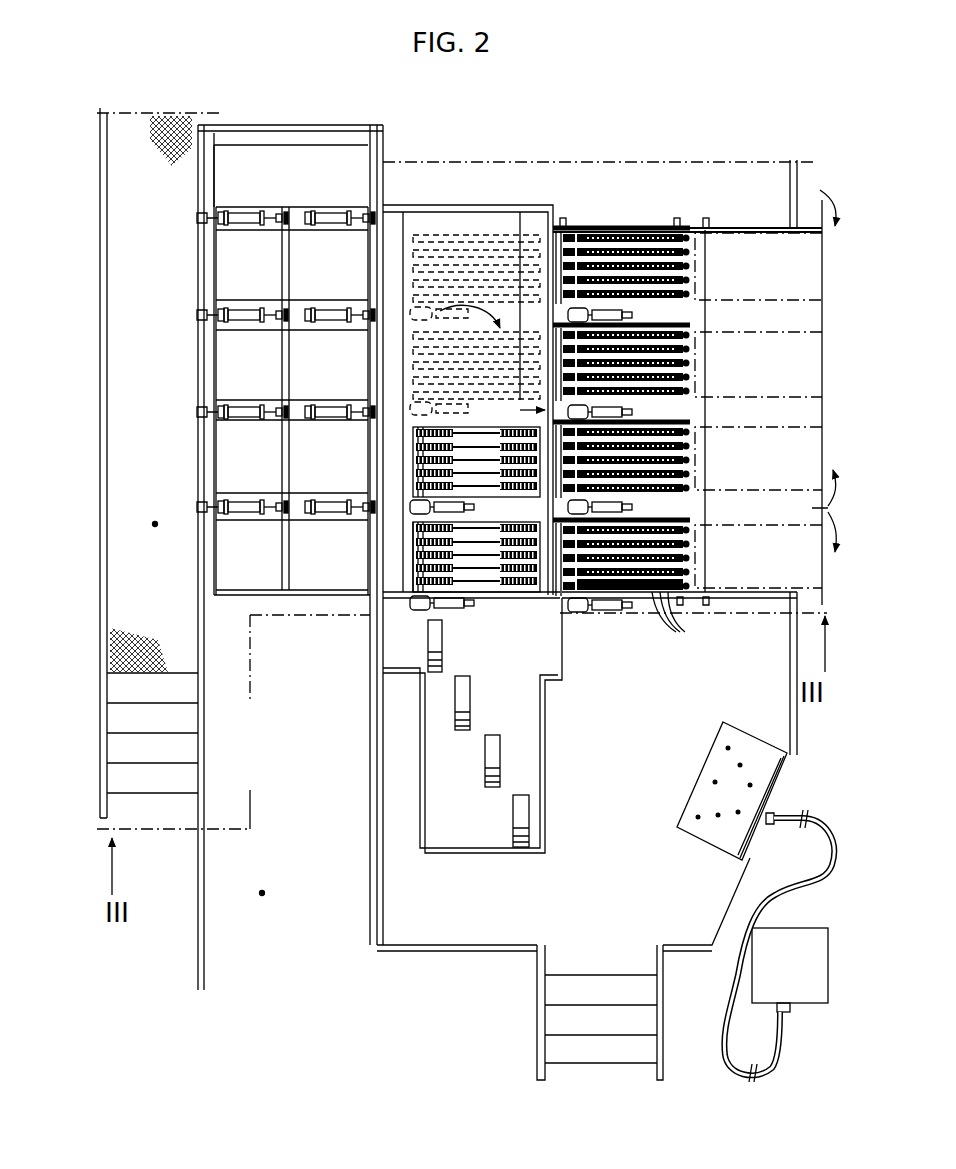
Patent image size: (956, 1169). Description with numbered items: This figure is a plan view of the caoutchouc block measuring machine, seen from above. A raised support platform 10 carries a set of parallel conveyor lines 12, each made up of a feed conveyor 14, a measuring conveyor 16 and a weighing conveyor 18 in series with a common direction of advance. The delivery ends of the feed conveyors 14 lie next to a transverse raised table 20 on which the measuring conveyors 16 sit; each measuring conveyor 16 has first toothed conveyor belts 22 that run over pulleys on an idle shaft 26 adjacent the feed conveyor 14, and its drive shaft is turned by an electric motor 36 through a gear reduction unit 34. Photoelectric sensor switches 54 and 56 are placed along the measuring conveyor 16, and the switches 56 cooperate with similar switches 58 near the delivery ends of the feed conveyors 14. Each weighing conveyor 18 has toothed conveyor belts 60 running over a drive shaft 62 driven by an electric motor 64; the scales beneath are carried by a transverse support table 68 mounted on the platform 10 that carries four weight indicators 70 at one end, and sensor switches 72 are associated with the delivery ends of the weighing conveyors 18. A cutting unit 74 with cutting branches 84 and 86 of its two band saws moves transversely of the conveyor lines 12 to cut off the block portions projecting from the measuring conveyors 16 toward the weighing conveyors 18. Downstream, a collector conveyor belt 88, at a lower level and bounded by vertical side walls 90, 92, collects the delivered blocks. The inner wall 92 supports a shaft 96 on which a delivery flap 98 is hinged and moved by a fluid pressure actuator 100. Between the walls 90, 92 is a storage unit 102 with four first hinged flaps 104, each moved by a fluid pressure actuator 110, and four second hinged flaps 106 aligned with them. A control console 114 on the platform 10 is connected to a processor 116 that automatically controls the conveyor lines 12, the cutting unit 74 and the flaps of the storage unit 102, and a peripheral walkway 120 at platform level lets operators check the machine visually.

The raised support platform 10 is at (697, 913).
The conveyor lines 12 is at (810, 384).
The feed conveyor 14 is at (776, 245).
The measuring conveyor 16 is at (616, 226).
The weighing conveyor 18 is at (478, 232).
The transverse raised table 20 is at (692, 409).
The first toothed conveyor belts 22 is at (684, 620).
The idle shaft 26 is at (690, 548).
The gear reduction unit 34 is at (576, 612).
The electric motor 36 is at (630, 612).
The photoelectric sensor switch 54 is at (564, 218).
The photoelectric sensor switch 56 is at (678, 218).
The sensor switches 58 is at (706, 218).
The toothed conveyor belts 60 is at (415, 447).
The drive shaft 62 is at (416, 528).
The electric motor 64 is at (428, 502).
The transverse support table 68 is at (520, 752).
The weight indicators 70 is at (513, 813).
The photoelectric sensor switches 72 is at (445, 603).
The cutting unit 74 is at (392, 203).
The cutting branch 84 is at (535, 222).
The cutting branch 86 is at (513, 410).
The collector conveyor belt 88 is at (263, 879).
The vertical side wall 90 is at (207, 710).
The vertical side wall 92 is at (373, 812).
The shaft 96 is at (394, 402).
The delivery flap 98 is at (420, 607).
The fluid pressure actuator 100 is at (320, 218).
The storage unit 102 is at (190, 338).
The first hinged flaps 104 is at (305, 368).
The second hinged flaps 106 is at (235, 252).
The fluid pressure actuator 110 is at (247, 218).
The control console 114 is at (710, 798).
The processor 116 is at (804, 945).
The peripheral walkway 120 is at (164, 509).